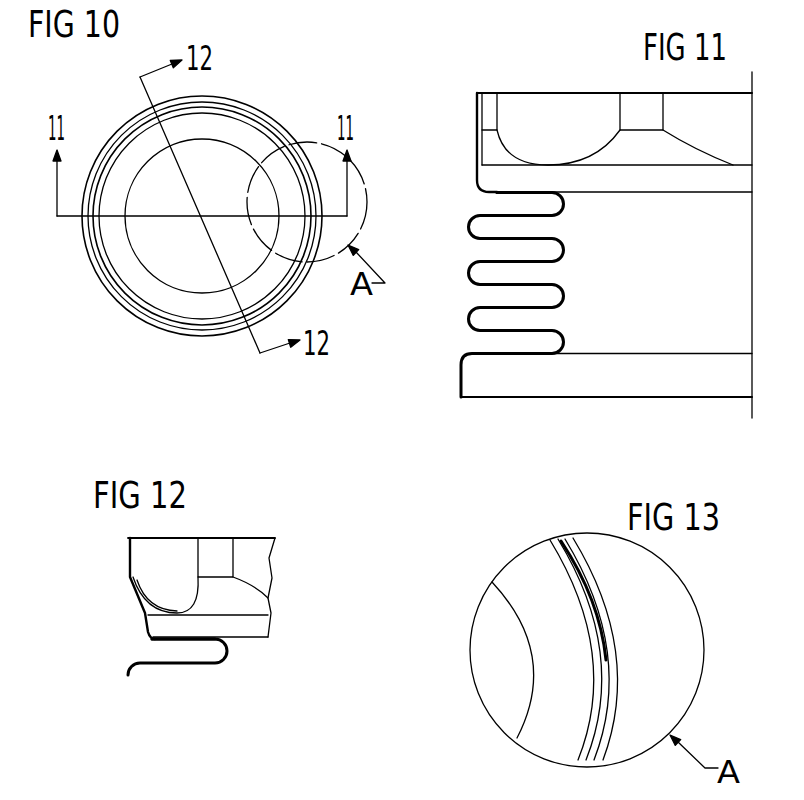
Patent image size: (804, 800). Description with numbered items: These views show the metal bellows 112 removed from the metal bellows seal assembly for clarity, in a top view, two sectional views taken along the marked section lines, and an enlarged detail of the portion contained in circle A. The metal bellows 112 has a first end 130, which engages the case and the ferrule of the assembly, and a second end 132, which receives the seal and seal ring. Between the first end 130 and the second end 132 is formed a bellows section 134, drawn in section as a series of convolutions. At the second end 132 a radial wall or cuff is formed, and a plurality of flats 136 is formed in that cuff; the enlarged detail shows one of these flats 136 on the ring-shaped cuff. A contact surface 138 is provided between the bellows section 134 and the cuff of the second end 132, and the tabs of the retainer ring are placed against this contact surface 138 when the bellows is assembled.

In FIG. 10, the metal bellows 112 is at (178, 218).
In FIG. 11, the metal bellows 112 is at (562, 228).
In FIG. 12, the metal bellows 112 is at (156, 606).
In FIG. 13, the metal bellows 112 is at (583, 632).
In FIG. 11, the first end 130 is at (460, 392).
In FIG. 11, the second end 132 is at (477, 107).
In FIG. 12, the second end 132 is at (128, 548).
In FIG. 13, the second end 132 is at (595, 583).
In FIG. 11, the bellows section 134 is at (467, 278).
In FIG. 12, the bellows section 134 is at (200, 665).
In FIG. 10, the flats 136 is at (205, 108).
In FIG. 12, the flats 136 is at (170, 558).
In FIG. 13, the flats 136 is at (600, 663).
In FIG. 11, the contact surface 138 is at (497, 200).
In FIG. 12, the contact surface 138 is at (148, 643).